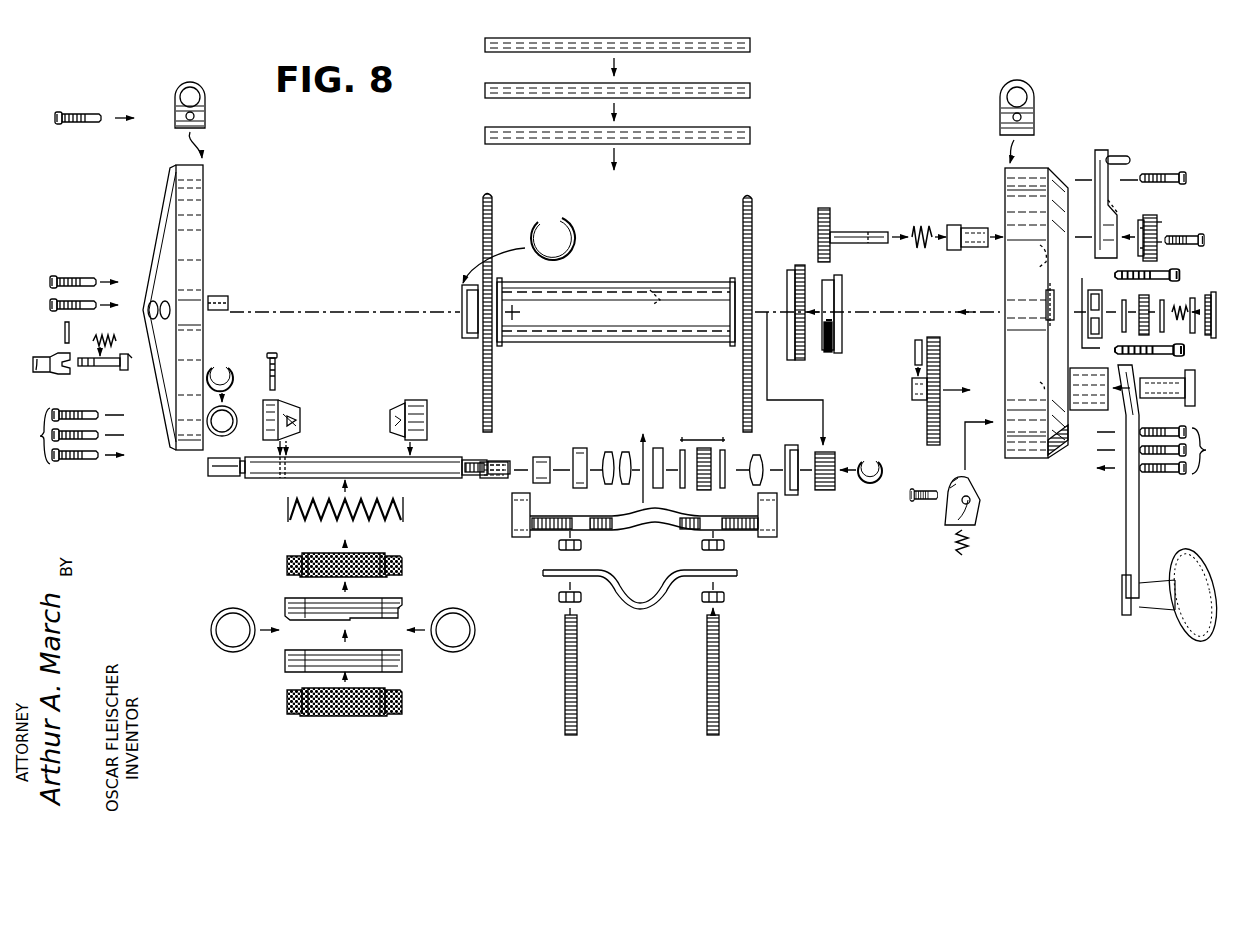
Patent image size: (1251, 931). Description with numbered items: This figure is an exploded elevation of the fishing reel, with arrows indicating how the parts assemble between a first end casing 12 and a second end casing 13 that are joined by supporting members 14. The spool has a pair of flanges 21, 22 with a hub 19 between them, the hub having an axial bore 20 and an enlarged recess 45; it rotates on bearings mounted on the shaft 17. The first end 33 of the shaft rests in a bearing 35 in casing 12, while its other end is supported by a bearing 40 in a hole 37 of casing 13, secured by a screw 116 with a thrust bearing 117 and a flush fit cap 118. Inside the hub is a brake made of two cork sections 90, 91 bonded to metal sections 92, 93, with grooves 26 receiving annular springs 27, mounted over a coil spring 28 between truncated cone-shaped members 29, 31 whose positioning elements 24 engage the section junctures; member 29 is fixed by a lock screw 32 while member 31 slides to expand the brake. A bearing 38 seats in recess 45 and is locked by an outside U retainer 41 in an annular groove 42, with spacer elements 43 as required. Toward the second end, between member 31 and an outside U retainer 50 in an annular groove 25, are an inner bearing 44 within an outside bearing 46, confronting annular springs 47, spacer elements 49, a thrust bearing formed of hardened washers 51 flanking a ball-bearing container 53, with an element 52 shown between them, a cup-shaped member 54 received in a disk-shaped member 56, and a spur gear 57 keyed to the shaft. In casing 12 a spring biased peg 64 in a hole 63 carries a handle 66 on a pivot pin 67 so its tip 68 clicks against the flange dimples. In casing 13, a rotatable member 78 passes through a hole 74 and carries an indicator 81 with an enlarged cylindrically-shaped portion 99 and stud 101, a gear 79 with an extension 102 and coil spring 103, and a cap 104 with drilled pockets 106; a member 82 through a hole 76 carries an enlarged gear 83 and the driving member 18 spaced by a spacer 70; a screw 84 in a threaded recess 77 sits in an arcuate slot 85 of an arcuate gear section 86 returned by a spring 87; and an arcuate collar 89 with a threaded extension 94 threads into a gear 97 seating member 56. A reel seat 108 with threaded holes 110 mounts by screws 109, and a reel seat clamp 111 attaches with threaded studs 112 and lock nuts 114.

The first end casing 12 is at (190, 218).
The second end casing 13 is at (1035, 170).
The supporting members 14 is at (708, 38).
The shaft 17 is at (346, 460).
The driving member 18 is at (1125, 545).
The hub 19 is at (598, 282).
The axial bore 20 is at (654, 292).
The spool flange 21 is at (493, 202).
The spool flange 22 is at (743, 200).
The positioning elements 24 is at (298, 420).
The annular groove 25 is at (478, 459).
The grooves 26 is at (298, 555).
The annular springs 27 is at (218, 614).
The coil spring 28 is at (405, 515).
The truncated cone-shaped member 29 is at (282, 400).
The truncated cone-shaped member 31 is at (418, 400).
The lock screw 32 is at (280, 365).
The first end 33 is at (212, 480).
The bearing 35 is at (216, 297).
The hole 37 is at (1046, 304).
The bearing 38 is at (463, 330).
The bearing 40 is at (1102, 344).
The outside U retainer 41 is at (226, 366).
The annular groove 42 is at (243, 474).
The spacer elements 43 is at (240, 455).
The inner bearing 44 is at (535, 462).
The enlarged recess 45 is at (508, 340).
The outside bearing 46 is at (580, 448).
The annular springs 47 is at (610, 452).
The spacer elements 49 is at (648, 455).
The outside U retainer 50 is at (868, 458).
The disk-shaped washers 51 is at (722, 489).
The friction disc 52 is at (705, 448).
The ball-bearing container 53 is at (696, 440).
The cup-shaped member 54 is at (758, 455).
The disk-shaped member 56 is at (795, 496).
The spur gear 57 is at (828, 492).
The hole 63 is at (103, 334).
The spring biased peg 64 is at (92, 366).
The handle 66 is at (36, 372).
The pivot pin 67 is at (62, 330).
The tip 68 is at (130, 366).
The spacer 70 is at (1092, 384).
The hole 74 is at (1040, 262).
The hole 76 is at (1042, 386).
The threaded recess 77 is at (1060, 452).
The rotatable member 78 is at (966, 228).
The gear 79 is at (822, 207).
The indicator 81 is at (1108, 150).
The member 82 is at (1168, 396).
The enlarged gear 83 is at (926, 418).
The screw 84 is at (926, 502).
The elongated arcuate slot 85 is at (970, 506).
The arcuate gear section 86 is at (976, 490).
The spring 87 is at (968, 546).
The arcuate collar 89 is at (842, 292).
The brake section 90 is at (400, 562).
The brake section 91 is at (402, 702).
The metal section 92 is at (400, 598).
The metal section 93 is at (400, 665).
The threaded extension 94 is at (828, 354).
The gear 97 is at (792, 268).
The enlarged cylindrically-shaped portion 99 is at (1150, 215).
The stud 101 is at (1114, 216).
The extension 102 is at (855, 232).
The coil spring 103 is at (914, 230).
The cap 104 is at (1158, 220).
The drilled pockets 106 is at (1158, 240).
The reel seat 108 is at (740, 532).
The screws 109 is at (626, 441).
The threaded holes 110 is at (598, 535).
The reel seat clamp 111 is at (630, 605).
The threaded studs 112 is at (578, 690).
The lock nuts 114 is at (558, 546).
The screw 116 is at (1183, 300).
The thrust bearing 117 is at (1145, 290).
The flush fit cap 118 is at (1213, 300).